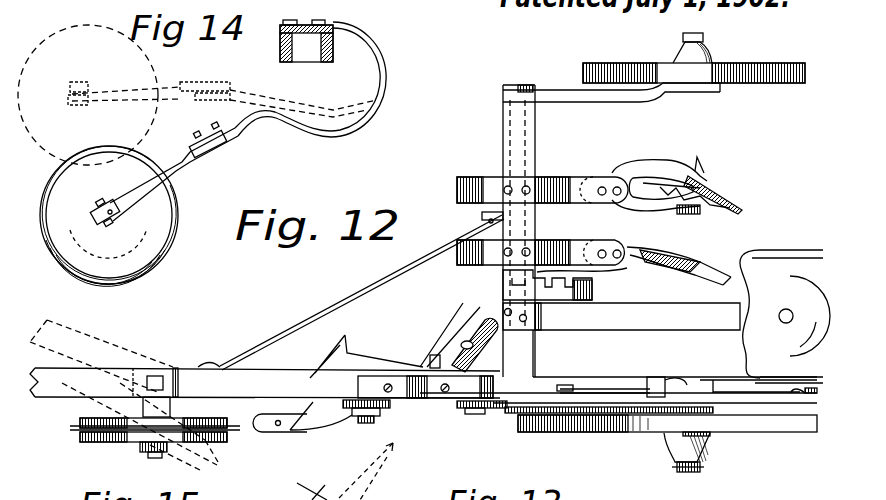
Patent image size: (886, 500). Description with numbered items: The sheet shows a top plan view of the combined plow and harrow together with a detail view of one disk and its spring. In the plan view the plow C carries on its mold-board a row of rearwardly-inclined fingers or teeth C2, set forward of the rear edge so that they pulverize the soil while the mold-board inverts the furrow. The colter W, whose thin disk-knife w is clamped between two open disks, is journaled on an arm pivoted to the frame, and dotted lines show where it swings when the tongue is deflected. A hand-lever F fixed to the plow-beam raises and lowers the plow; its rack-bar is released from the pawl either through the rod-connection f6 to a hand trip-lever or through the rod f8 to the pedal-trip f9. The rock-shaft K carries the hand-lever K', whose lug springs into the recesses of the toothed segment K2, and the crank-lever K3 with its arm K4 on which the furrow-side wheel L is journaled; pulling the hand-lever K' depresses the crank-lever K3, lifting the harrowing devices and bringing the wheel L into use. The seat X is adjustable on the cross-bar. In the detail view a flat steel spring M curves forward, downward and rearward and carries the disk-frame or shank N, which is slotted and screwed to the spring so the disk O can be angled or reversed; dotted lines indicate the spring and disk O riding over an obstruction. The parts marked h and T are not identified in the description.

In FIG. 12, the beam h is at (265, 395).
In FIG. 12, the colter W is at (153, 431).
In FIG. 12, the disk-knife w is at (157, 437).
In FIG. 12, the plow C is at (366, 356).
In FIG. 12, the fingers or teeth C2 is at (459, 335).
In FIG. 12, the rock-shaft K is at (531, 231).
In FIG. 12, the hand-lever K' is at (621, 300).
In FIG. 12, the toothed segment K2 is at (592, 290).
In FIG. 12, the crank-lever K3 is at (583, 100).
In FIG. 12, the arm K4 is at (702, 38).
In FIG. 12, the furrow-side wheel L is at (775, 58).
In FIG. 14, the flat steel springs M is at (227, 78).
In FIG. 12, the flat steel springs M is at (529, 190).
In FIG. 14, the disk-frames or teeth-shanks N is at (178, 169).
In FIG. 14, the disk O is at (109, 216).
In FIG. 12, the disk O is at (677, 221).
In FIG. 12, the seat X is at (785, 316).
In FIG. 12, the hand-lever F is at (722, 390).
In FIG. 12, the rod-connection f6 is at (765, 387).
In FIG. 12, the rod f8 is at (601, 392).
In FIG. 12, the pedal-trip f9 is at (667, 376).
In FIG. 12, the stem T is at (750, 403).